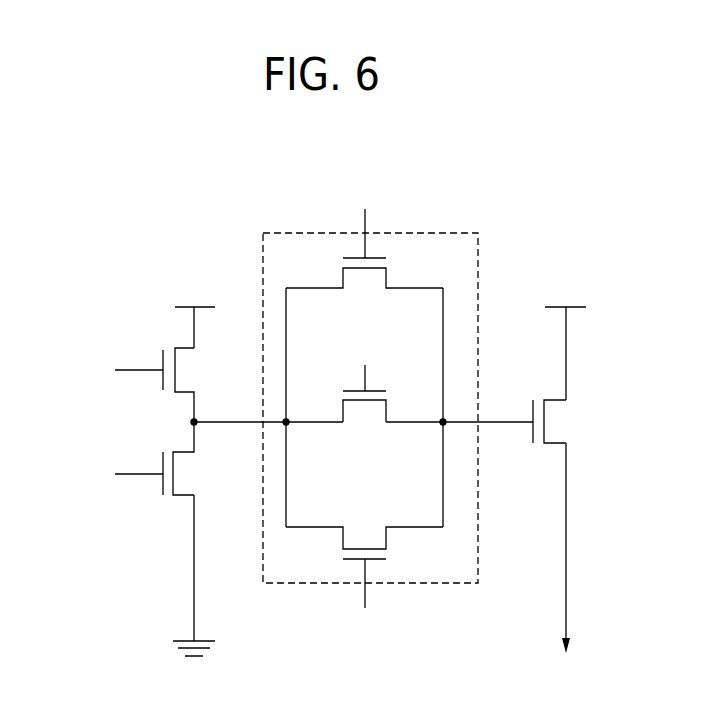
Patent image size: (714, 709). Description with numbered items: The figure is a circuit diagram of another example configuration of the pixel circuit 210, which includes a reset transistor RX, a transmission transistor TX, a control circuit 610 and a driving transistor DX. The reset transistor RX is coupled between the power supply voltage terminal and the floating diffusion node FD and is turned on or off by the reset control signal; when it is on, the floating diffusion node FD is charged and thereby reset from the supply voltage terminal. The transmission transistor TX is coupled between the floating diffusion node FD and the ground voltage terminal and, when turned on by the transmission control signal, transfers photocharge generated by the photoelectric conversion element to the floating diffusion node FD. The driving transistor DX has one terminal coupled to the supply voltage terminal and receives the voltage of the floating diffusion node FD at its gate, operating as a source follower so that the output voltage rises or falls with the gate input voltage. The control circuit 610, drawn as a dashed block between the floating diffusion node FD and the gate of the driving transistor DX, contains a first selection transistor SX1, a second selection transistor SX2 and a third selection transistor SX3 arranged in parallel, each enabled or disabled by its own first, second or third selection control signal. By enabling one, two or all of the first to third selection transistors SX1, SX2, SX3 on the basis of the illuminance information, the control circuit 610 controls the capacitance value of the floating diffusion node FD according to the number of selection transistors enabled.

The pixel circuit 210 is at (68, 210).
The control circuit 610 is at (443, 232).
The reset transistor RX is at (187, 385).
The transmission transistor TX is at (187, 458).
The driving transistor DX is at (559, 421).
The floating diffusion node FD is at (348, 423).
The first selection transistor SX1 is at (364, 282).
The second selection transistor SX2 is at (364, 416).
The third selection transistor SX3 is at (364, 535).